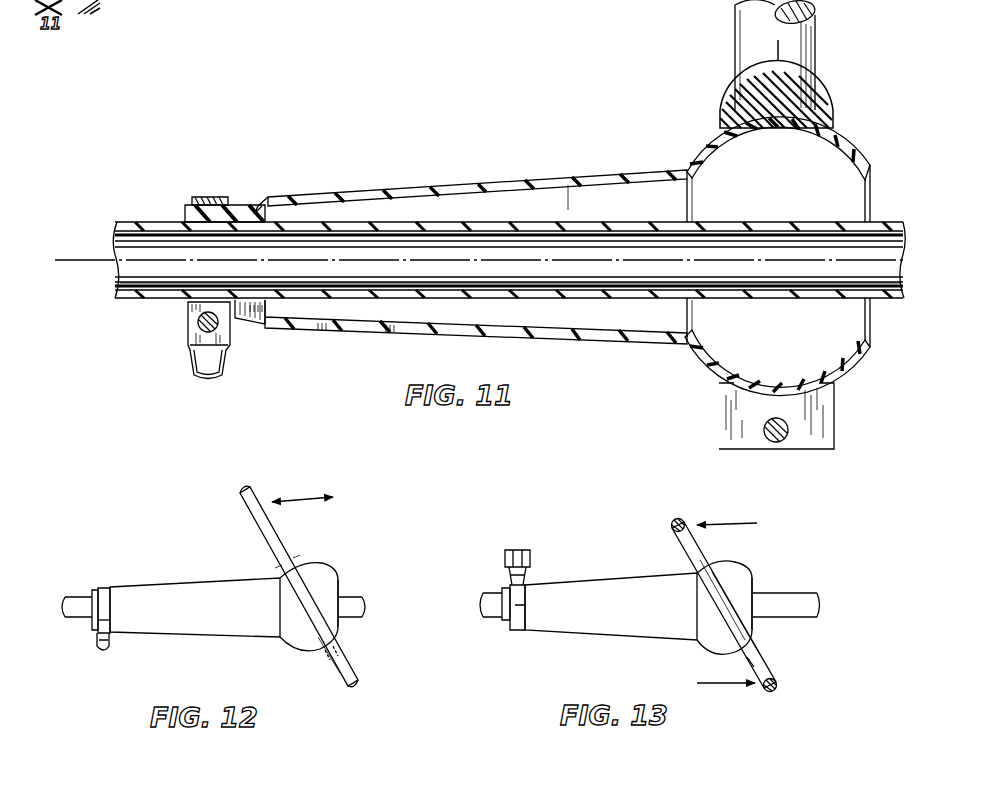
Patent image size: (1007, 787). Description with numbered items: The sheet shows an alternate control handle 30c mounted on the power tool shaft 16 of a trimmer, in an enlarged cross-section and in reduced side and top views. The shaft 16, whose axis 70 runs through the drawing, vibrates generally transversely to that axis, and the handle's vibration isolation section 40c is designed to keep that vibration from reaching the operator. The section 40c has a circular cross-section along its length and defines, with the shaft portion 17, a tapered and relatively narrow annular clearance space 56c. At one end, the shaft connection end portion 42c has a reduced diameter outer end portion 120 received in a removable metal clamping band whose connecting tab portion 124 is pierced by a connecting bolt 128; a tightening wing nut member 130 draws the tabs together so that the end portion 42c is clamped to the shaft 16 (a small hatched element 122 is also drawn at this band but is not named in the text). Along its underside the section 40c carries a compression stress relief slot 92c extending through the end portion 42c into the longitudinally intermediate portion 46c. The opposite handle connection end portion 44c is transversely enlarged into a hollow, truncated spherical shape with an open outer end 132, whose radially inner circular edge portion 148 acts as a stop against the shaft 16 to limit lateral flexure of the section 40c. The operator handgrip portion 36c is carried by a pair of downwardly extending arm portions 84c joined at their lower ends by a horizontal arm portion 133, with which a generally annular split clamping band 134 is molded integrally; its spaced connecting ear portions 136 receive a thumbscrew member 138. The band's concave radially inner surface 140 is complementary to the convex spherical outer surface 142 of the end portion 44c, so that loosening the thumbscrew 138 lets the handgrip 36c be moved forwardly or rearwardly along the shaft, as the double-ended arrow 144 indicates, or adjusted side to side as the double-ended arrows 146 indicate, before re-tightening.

In FIG. 11, the shaft 16 is at (142, 218).
In FIG. 12, the shaft 16 is at (74, 620).
In FIG. 13, the shaft 16 is at (490, 625).
In FIG. 11, the shaft portion 17 is at (632, 284).
In FIG. 11, the axis 70 is at (92, 245).
In FIG. 11, the handle 30c is at (465, 160).
In FIG. 12, the handle 30c is at (200, 567).
In FIG. 13, the handle 30c is at (632, 563).
In FIG. 11, the vibration isolation section 40c is at (396, 183).
In FIG. 12, the vibration isolation section 40c is at (225, 640).
In FIG. 13, the vibration isolation section 40c is at (640, 640).
In FIG. 11, the shaft connection end portion 42c is at (240, 205).
In FIG. 11, the handle connection end portion 44c is at (694, 140).
In FIG. 12, the handle connection end portion 44c is at (320, 560).
In FIG. 13, the handle connection end portion 44c is at (745, 560).
In FIG. 11, the longitudinally intermediate portion 46c is at (515, 180).
In FIG. 12, the longitudinally intermediate portion 46c is at (252, 578).
In FIG. 13, the longitudinally intermediate portion 46c is at (611, 606).
In FIG. 11, the annular clearance space 56c is at (575, 185).
In FIG. 11, the compression stress relief slot 92c is at (372, 332).
In FIG. 11, the reduced diameter outer end portion 120 is at (186, 205).
In FIG. 12, the reduced diameter outer end portion 120 is at (92, 595).
In FIG. 13, the reduced diameter outer end portion 120 is at (504, 588).
In FIG. 11, the clamp ring 122 is at (208, 197).
In FIG. 12, the clamp ring 122 is at (100, 588).
In FIG. 13, the clamp ring 122 is at (528, 606).
In FIG. 11, the connecting tab portion 124 is at (218, 322).
In FIG. 11, the connecting bolt 128 is at (197, 325).
In FIG. 12, the connecting bolt 128 is at (105, 622).
In FIG. 11, the tightening wing nut member 130 is at (190, 362).
In FIG. 12, the tightening wing nut member 130 is at (104, 655).
In FIG. 13, the tightening wing nut member 130 is at (518, 550).
In FIG. 11, the open outer end 132 is at (870, 172).
In FIG. 12, the open outer end 132 is at (345, 580).
In FIG. 13, the open outer end 132 is at (758, 582).
In FIG. 11, the arm portion 133 is at (795, 75).
In FIG. 13, the arm portion 133 is at (767, 660).
In FIG. 11, the split clamping band 134 is at (820, 110).
In FIG. 12, the split clamping band 134 is at (335, 680).
In FIG. 13, the split clamping band 134 is at (762, 632).
In FIG. 11, the connecting ear portion 136 is at (718, 403).
In FIG. 11, the thumbscrew member 138 is at (776, 443).
In FIG. 12, the thumbscrew member 138 is at (345, 657).
In FIG. 13, the thumbscrew member 138 is at (750, 662).
In FIG. 11, the radially inner surface 140 is at (755, 133).
In FIG. 11, the outer surface 142 is at (845, 140).
In FIG. 11, the radially inner circular edge portion 148 is at (866, 192).
In FIG. 12, the operator handgrip portion 36c is at (245, 488).
In FIG. 12, the arm portion 84c is at (242, 510).
In FIG. 13, the arm portion 84c is at (680, 518).
In FIG. 12, the double-ended arrow 144 is at (308, 492).
In FIG. 13, the double-ended arrows 146 is at (735, 518).